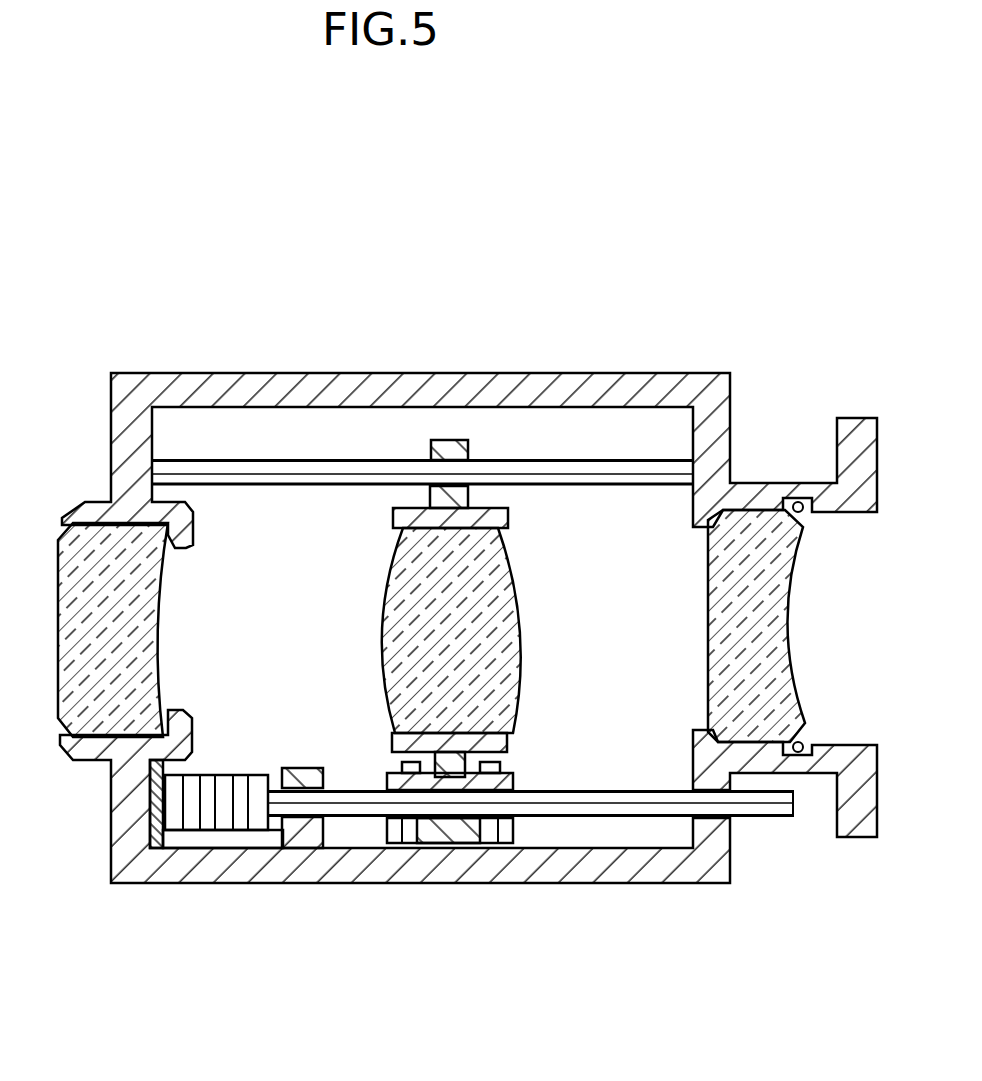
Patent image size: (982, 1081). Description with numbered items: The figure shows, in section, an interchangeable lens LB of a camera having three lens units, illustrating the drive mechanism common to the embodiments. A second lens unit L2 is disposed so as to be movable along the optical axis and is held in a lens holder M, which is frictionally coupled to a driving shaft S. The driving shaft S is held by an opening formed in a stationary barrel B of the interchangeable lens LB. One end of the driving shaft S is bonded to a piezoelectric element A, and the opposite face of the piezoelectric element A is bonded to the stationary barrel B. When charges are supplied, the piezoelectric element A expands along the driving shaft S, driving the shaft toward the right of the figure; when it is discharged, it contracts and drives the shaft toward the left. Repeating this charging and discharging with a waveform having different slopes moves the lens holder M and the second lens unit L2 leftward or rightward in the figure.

The interchangeable lens LB is at (583, 348).
The second lens unit L2 is at (503, 583).
The lens holder M is at (507, 782).
The piezoelectric element A is at (230, 817).
The stationary barrel B is at (297, 863).
The driving shaft S is at (615, 808).